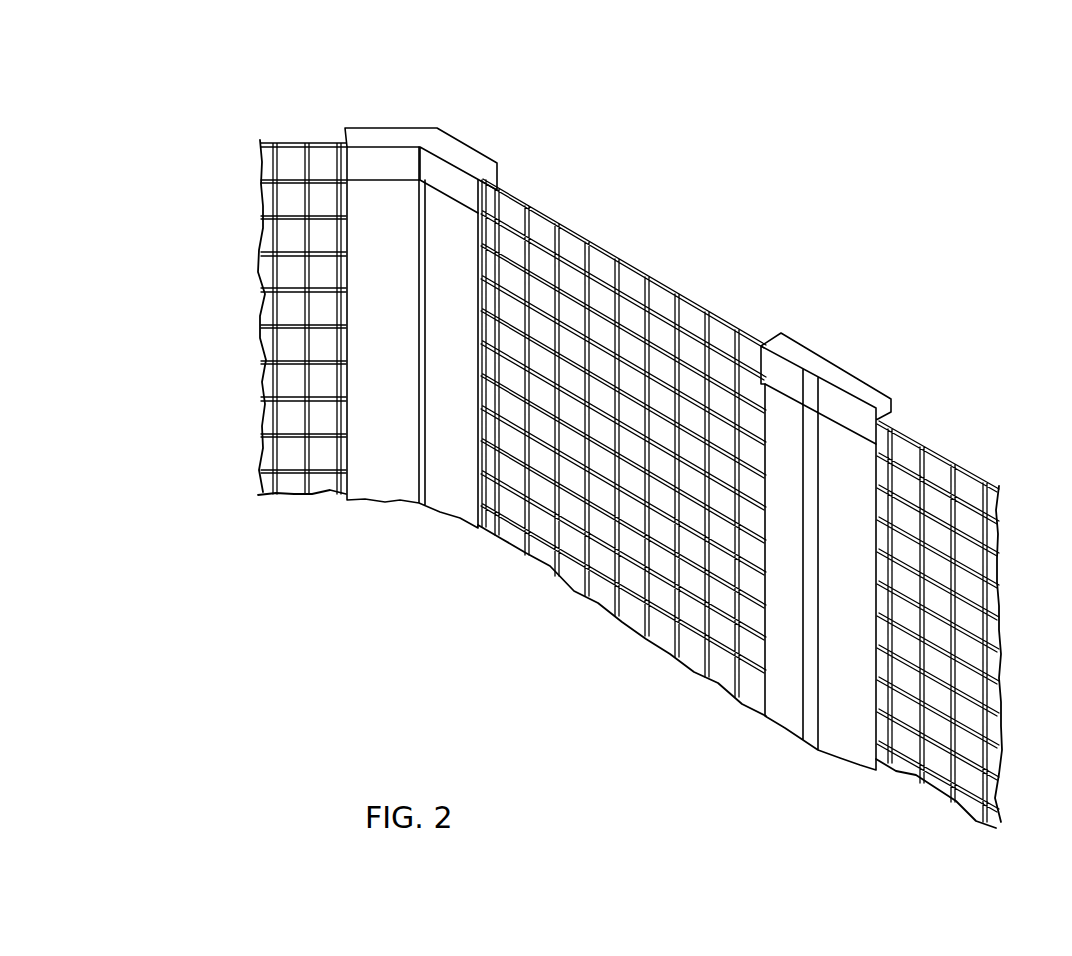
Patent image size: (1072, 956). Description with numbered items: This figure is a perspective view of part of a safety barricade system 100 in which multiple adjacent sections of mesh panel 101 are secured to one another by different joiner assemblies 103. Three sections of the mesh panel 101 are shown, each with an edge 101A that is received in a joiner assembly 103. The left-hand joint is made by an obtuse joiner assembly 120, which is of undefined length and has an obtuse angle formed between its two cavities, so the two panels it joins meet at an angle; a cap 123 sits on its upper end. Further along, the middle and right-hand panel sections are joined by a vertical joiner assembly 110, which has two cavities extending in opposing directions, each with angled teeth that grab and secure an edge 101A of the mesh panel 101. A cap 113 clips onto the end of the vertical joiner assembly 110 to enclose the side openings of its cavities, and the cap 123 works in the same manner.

The safety barricade system 100 is at (962, 132).
The mesh panel 101 is at (300, 292).
The edge of the mesh panel 101A is at (308, 148).
The joiner assembly 103 is at (646, 402).
The vertical joiner assembly 110 is at (843, 518).
The cap 113 is at (847, 375).
The obtuse joiner assembly 120 is at (393, 483).
The cap 123 is at (403, 133).